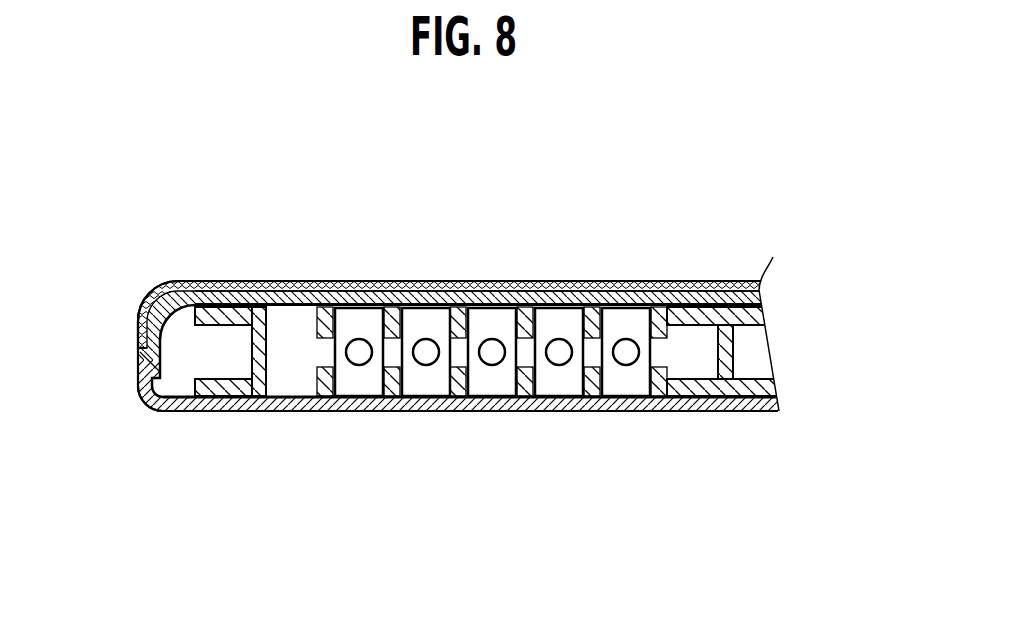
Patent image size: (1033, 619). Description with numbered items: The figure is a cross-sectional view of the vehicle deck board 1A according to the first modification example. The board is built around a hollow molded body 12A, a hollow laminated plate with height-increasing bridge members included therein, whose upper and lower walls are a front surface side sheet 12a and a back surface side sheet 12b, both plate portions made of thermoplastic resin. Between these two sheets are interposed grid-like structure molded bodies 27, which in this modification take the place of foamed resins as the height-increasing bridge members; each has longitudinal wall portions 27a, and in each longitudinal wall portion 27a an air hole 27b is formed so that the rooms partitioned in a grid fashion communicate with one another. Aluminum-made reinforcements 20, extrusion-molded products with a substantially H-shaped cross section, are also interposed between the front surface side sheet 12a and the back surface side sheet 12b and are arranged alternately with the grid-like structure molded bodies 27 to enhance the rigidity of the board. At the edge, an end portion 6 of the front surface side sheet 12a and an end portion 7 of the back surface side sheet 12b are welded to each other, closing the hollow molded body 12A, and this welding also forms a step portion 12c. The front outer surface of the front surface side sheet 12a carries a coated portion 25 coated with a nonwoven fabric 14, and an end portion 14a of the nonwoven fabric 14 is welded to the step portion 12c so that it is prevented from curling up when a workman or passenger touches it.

The vehicle deck board 1A is at (518, 248).
The end portion of the front surface side sheet 6 is at (160, 291).
The end portion of the back surface side sheet 7 is at (148, 400).
The hollow molded body 12A is at (575, 413).
The front surface side sheet 12a is at (658, 282).
The back surface side sheet 12b is at (705, 413).
The step portion 12c is at (133, 350).
The nonwoven fabric 14 is at (708, 282).
The end portion of the nonwoven fabric 14a is at (138, 318).
The reinforcement 20 is at (735, 367).
The coated portion 25 is at (597, 281).
The grid-like structure molded body 27 is at (304, 366).
The longitudinal wall portion 27a is at (450, 372).
The air hole 27b is at (425, 348).